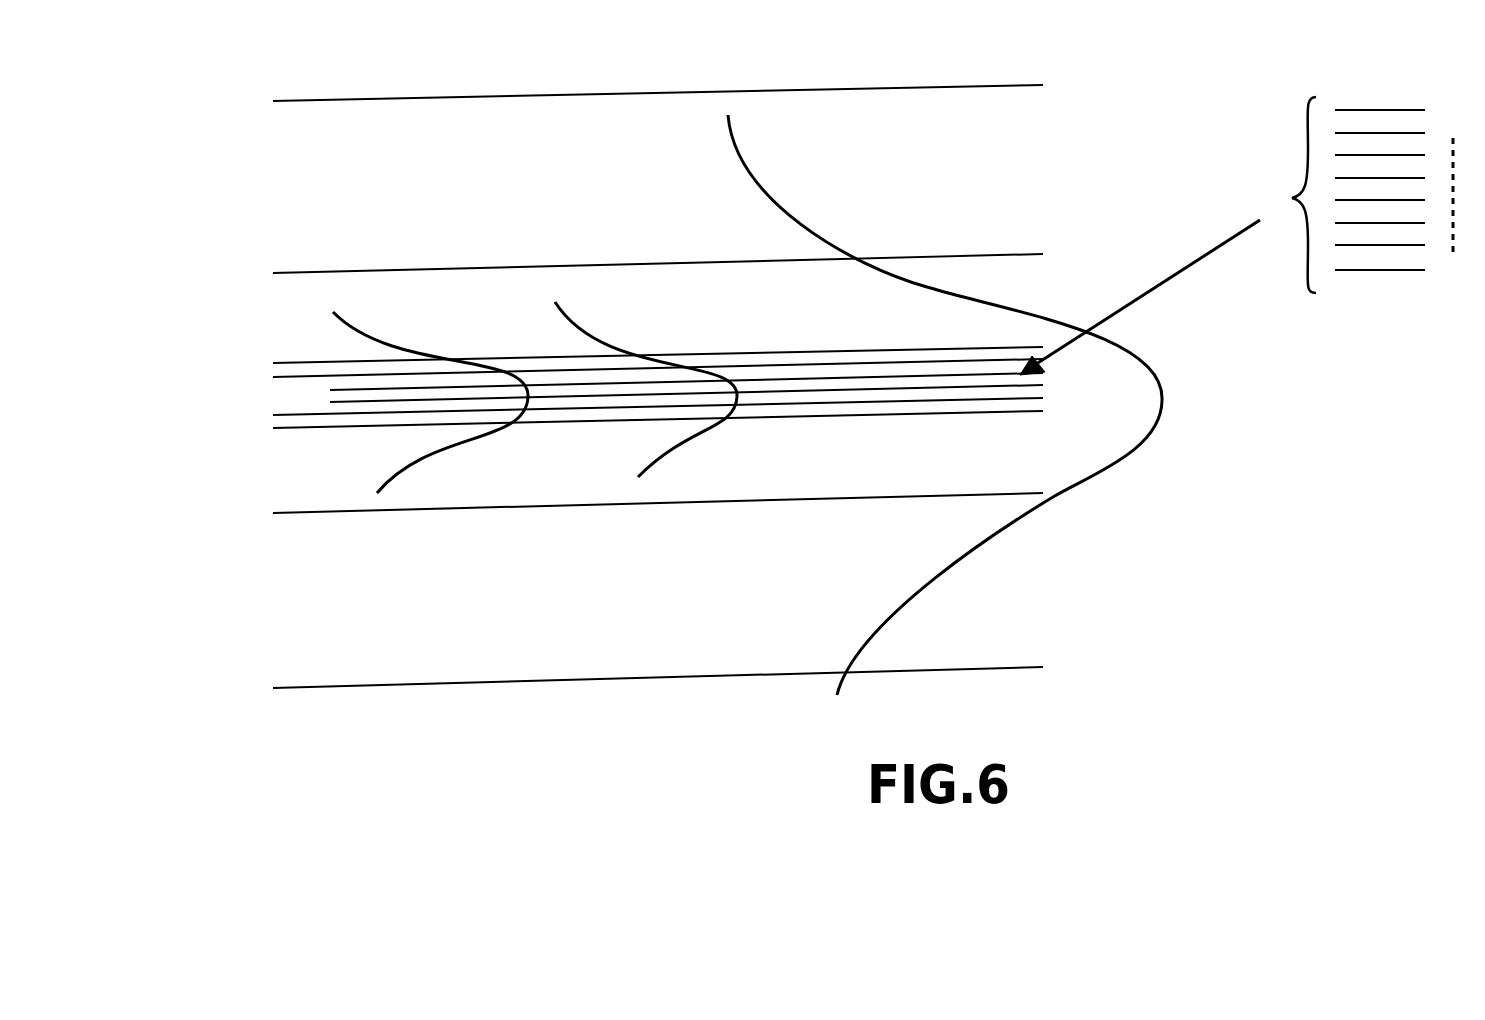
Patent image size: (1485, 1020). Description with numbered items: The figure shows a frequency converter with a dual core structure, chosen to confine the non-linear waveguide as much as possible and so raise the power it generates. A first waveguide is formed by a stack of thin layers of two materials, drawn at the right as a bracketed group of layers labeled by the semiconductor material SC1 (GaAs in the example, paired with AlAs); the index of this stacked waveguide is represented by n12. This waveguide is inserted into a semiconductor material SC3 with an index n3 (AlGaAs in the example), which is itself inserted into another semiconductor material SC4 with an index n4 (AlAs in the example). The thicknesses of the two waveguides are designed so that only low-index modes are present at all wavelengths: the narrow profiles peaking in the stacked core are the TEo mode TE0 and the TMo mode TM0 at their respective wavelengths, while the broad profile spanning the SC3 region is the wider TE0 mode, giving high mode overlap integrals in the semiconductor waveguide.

The semiconductor material SC4 is at (612, 386).
The semiconductor material SC3 is at (612, 383).
The semiconductor material SC1 is at (1248, 236).
The index of semiconductor material SC4 n4 is at (305, 369).
The index of semiconductor material SC3 n3 is at (292, 385).
The index of the first waveguide n12 is at (658, 387).
The TEo mode TE0 is at (812, 437).
The TMo mode TM0 is at (679, 484).